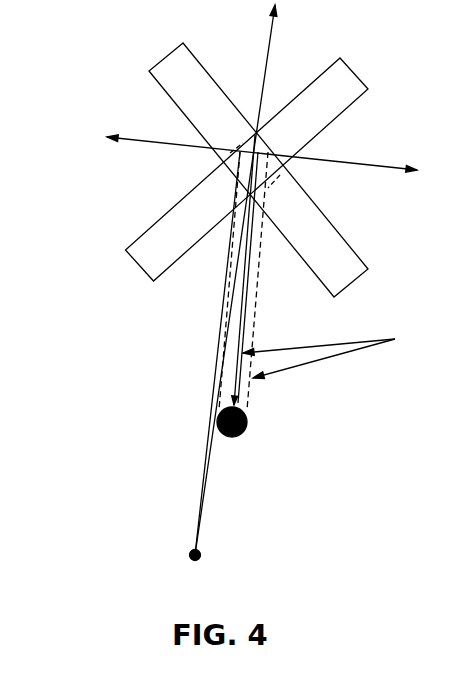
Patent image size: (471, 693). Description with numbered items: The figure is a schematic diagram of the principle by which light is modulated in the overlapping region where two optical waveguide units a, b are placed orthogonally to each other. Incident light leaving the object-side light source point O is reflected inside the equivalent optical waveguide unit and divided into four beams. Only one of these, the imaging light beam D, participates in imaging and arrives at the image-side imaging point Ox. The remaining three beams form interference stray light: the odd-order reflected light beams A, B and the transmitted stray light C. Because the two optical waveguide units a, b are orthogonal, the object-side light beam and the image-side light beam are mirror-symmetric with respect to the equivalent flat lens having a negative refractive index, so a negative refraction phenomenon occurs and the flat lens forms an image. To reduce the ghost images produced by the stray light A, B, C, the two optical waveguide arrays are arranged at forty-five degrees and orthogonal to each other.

The odd-order reflected light beam A is at (339, 181).
The odd-order reflected light beam B is at (148, 141).
The transmitted stray light C is at (252, 280).
The imaging light beam D is at (319, 333).
The optical waveguide unit a is at (247, 169).
The optical waveguide unit b is at (258, 170).
The object-side light source point O is at (202, 362).
The image-side imaging point Ox is at (248, 287).